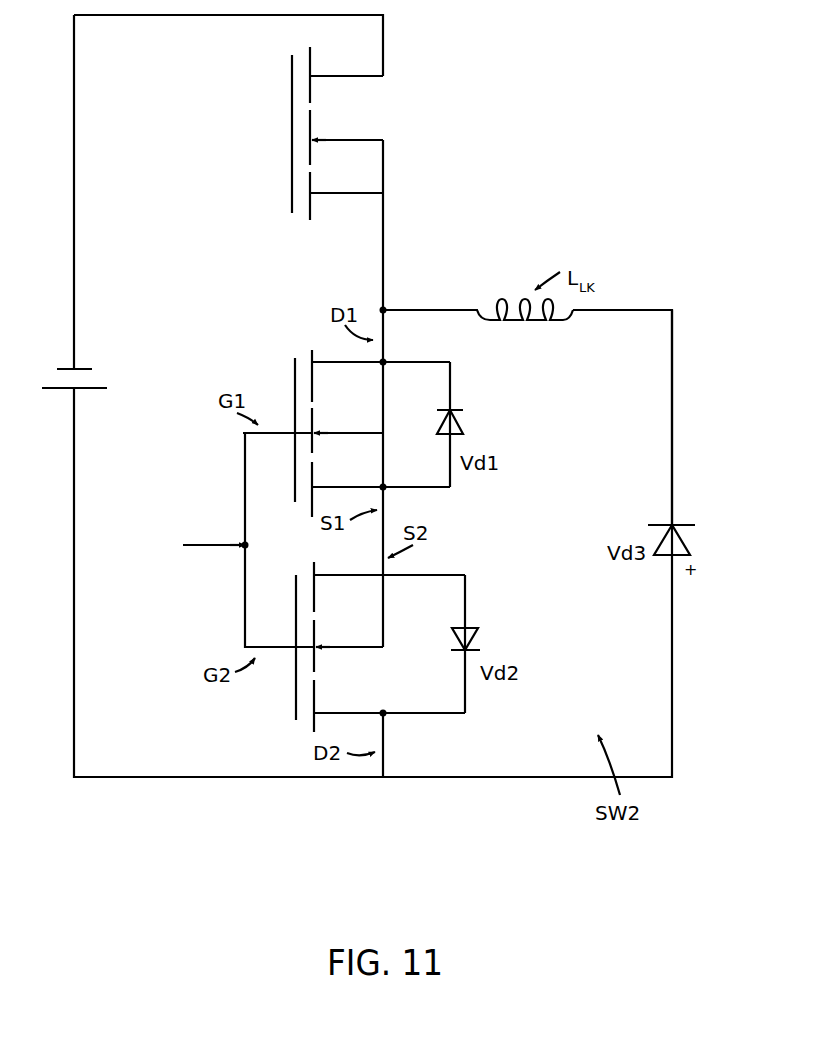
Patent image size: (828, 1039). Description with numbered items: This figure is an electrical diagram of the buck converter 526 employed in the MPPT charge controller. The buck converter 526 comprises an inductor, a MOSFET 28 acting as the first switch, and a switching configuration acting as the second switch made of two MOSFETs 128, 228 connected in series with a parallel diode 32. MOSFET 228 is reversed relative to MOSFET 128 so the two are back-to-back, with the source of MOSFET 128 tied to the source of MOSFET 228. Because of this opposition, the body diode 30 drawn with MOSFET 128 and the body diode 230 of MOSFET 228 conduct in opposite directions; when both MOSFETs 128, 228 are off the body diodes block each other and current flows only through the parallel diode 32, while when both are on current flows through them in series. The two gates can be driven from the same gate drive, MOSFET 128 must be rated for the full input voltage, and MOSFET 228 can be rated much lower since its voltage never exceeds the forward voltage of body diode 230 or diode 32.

The MOSFET 28 is at (277, 123).
The MOSFET 128 is at (268, 364).
The MOSFET 228 is at (288, 760).
The body diode Vd1 30 is at (465, 425).
The body diode 230 is at (483, 640).
The diode 32 is at (700, 550).
The buck converter 526 is at (705, 292).